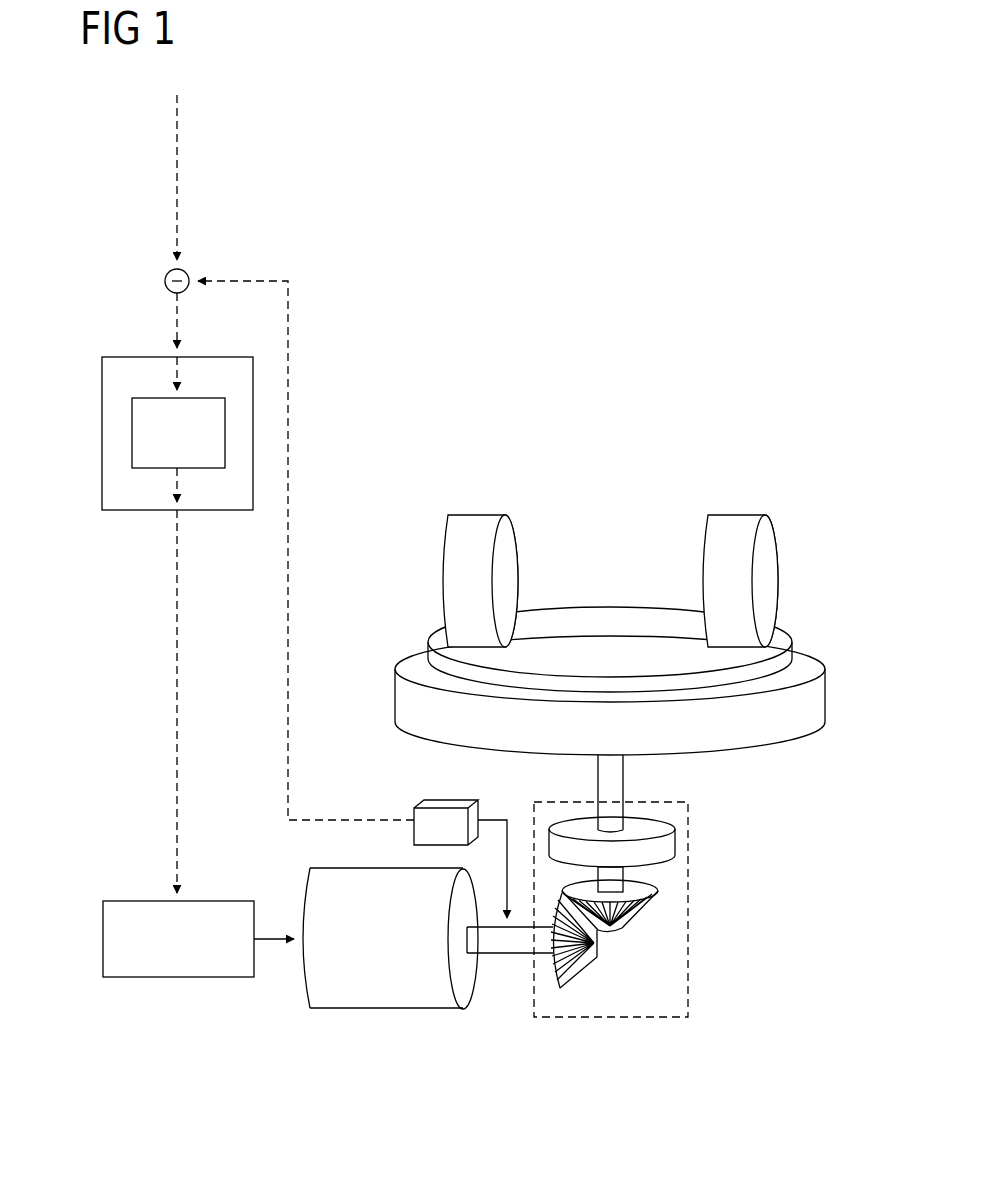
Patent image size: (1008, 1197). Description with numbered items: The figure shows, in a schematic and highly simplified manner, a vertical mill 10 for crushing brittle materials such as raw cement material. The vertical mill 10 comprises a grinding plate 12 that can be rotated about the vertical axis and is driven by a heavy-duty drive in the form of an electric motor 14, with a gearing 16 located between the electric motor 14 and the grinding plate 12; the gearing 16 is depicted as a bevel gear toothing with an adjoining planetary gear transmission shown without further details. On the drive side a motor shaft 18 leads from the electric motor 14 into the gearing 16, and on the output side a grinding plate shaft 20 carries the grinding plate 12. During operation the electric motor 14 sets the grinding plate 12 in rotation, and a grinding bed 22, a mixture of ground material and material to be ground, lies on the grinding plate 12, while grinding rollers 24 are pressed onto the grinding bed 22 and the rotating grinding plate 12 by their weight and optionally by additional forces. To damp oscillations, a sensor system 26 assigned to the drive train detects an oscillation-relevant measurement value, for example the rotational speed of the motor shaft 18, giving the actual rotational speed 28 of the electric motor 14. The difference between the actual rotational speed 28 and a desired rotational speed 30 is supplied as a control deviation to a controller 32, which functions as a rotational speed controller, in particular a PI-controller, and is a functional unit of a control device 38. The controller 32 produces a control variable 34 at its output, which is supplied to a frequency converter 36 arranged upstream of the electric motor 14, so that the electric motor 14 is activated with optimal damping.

The vertical mill 10 is at (615, 715).
The grinding plate 12 is at (763, 732).
The electric motor 14 is at (385, 1010).
The gearing 16 is at (688, 946).
The motor shaft 18 is at (505, 956).
The grinding plate shaft 20 is at (622, 780).
The grinding bed 22 is at (438, 640).
The grinding roller 24 is at (478, 528).
The sensor system 26 is at (416, 805).
The actual rotational speed 28 is at (288, 450).
The desired rotational speed 30 is at (177, 160).
The controller 32 is at (132, 440).
The control variable 34 is at (177, 697).
The frequency converter 36 is at (178, 978).
The control device 38 is at (144, 426).